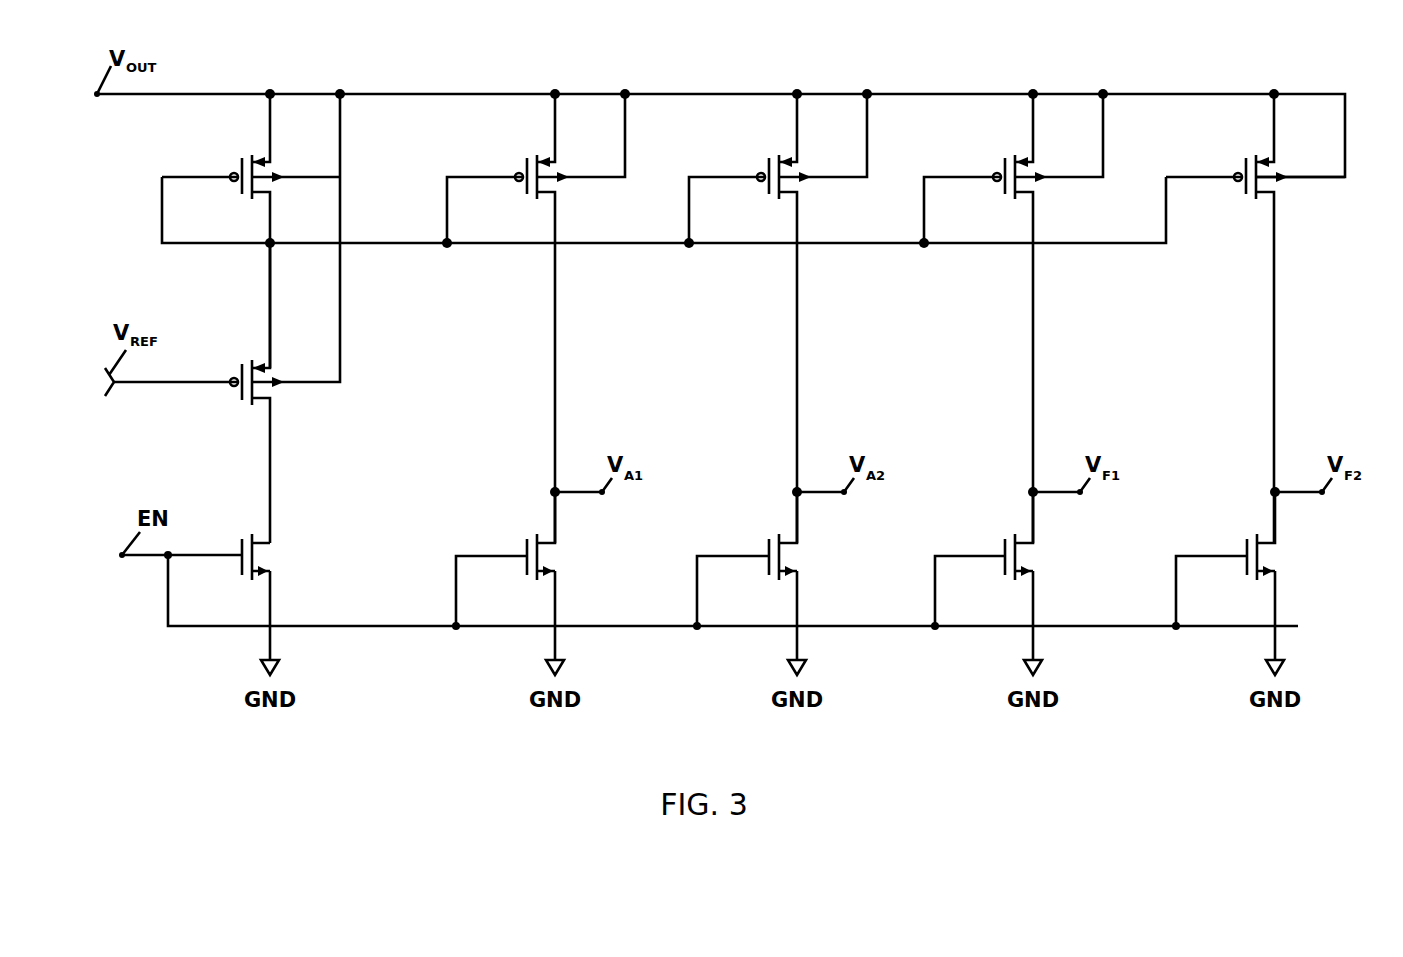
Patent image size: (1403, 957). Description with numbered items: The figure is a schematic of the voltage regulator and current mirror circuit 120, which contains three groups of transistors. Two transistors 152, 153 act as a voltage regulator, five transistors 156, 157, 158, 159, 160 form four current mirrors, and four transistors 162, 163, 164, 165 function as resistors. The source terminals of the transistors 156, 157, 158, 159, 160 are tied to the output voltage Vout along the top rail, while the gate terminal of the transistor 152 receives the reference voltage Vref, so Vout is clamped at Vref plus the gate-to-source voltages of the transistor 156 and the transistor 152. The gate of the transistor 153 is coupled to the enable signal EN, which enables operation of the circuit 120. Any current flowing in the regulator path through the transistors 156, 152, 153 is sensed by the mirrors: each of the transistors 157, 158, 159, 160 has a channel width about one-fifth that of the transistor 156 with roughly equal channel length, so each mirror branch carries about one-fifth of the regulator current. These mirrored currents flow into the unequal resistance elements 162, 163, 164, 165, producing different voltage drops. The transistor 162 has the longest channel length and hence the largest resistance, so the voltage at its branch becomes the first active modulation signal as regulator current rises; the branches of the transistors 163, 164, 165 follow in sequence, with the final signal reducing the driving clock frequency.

The voltage regulator and current mirror circuit 120 is at (410, 670).
The transistor 152 is at (241, 394).
The transistor 153 is at (241, 560).
The transistor 156 is at (240, 176).
The transistor 157 is at (525, 176).
The transistor 158 is at (767, 176).
The transistor 159 is at (1003, 176).
The transistor 160 is at (1243, 176).
The transistor 162 is at (527, 547).
The transistor 163 is at (769, 547).
The transistor 164 is at (1005, 547).
The transistor 165 is at (1247, 547).